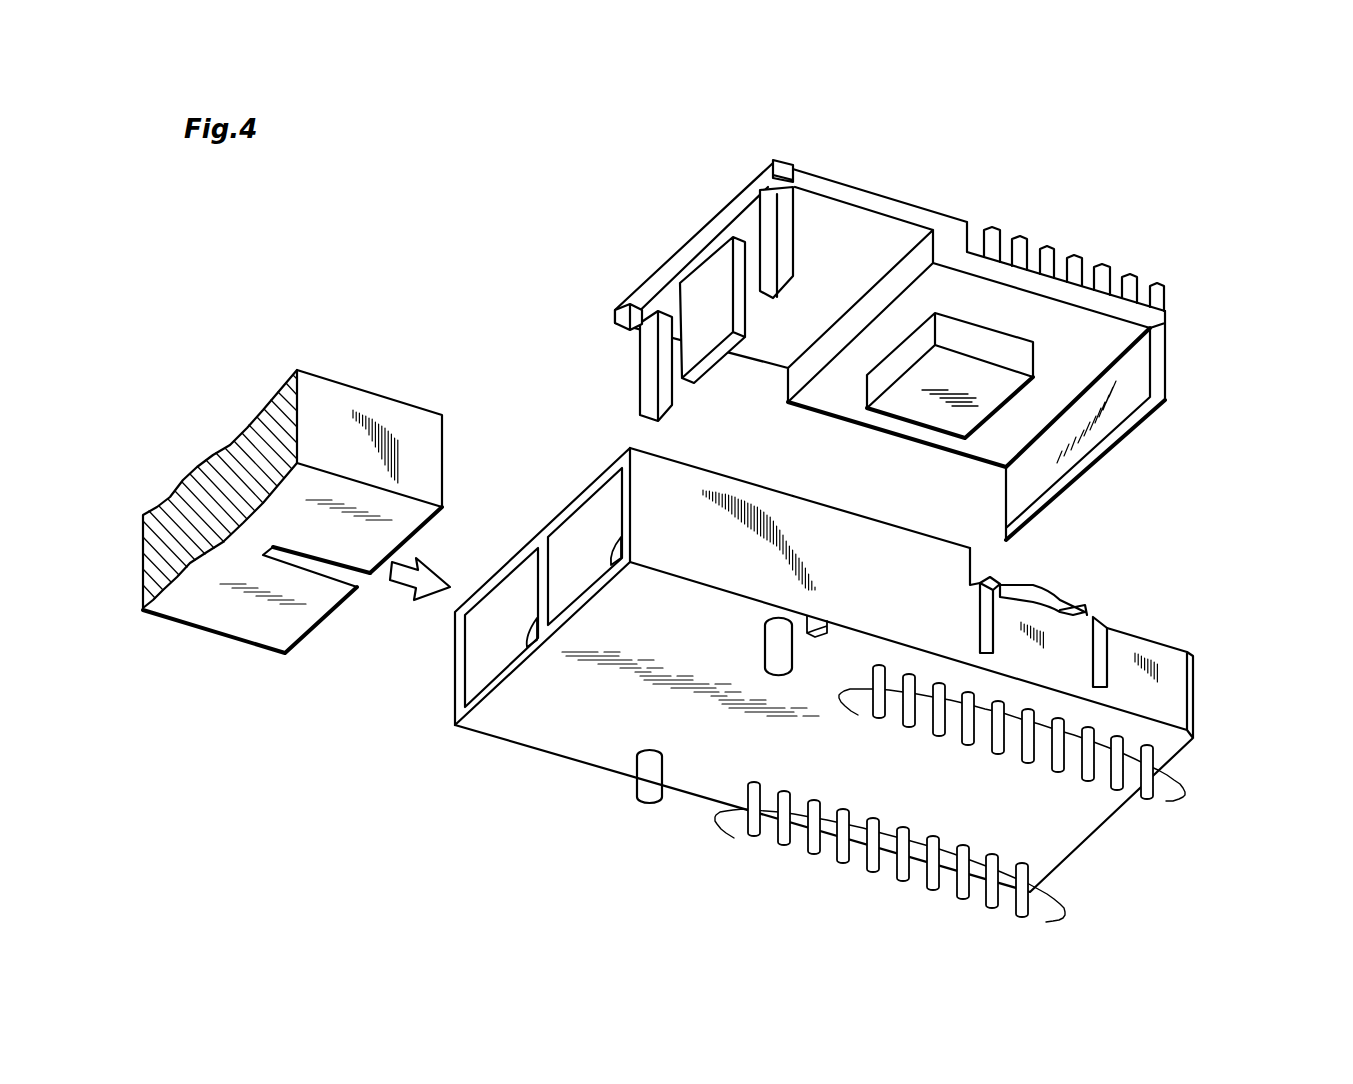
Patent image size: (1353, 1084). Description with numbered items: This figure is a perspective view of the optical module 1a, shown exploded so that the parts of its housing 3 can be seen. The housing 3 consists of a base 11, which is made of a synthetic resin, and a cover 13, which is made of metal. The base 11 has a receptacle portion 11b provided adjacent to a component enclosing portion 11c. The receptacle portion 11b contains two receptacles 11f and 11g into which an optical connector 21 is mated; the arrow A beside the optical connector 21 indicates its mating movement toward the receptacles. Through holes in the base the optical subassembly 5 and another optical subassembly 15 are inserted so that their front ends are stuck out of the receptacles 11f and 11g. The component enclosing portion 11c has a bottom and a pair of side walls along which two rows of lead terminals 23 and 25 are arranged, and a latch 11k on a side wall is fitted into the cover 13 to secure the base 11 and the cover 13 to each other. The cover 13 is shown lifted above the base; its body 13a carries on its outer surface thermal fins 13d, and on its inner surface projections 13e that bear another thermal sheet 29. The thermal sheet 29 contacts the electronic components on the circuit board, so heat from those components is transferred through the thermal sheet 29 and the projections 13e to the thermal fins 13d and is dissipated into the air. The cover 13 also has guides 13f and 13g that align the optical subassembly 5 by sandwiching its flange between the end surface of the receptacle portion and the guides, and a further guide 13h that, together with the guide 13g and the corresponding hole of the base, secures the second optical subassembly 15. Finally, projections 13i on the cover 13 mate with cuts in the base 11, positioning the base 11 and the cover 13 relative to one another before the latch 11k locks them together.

The optical module 1a is at (1206, 236).
The housing 3 is at (1221, 423).
The optical subassembly 5 is at (530, 623).
The base 11 is at (1193, 690).
The receptacle portion 11b is at (784, 486).
The component enclosing portion 11c is at (968, 542).
The receptacle 11f is at (490, 603).
The receptacle 11g is at (602, 512).
The latch 11k is at (1032, 596).
The cover 13 is at (1165, 354).
The cover plate portion 13a is at (765, 334).
The thermal fins 13d is at (1157, 283).
The projections 13e is at (880, 376).
The guide 13f is at (648, 324).
The guide 13g is at (707, 283).
The guide 13h is at (772, 214).
The projections 13i is at (786, 170).
The optical subassembly 15 is at (581, 557).
The optical connector 21 is at (372, 420).
The lead terminals 23 is at (1062, 916).
The lead terminals 25 is at (1158, 803).
The thermal sheet 29 is at (932, 405).
The insertion direction A is at (413, 578).